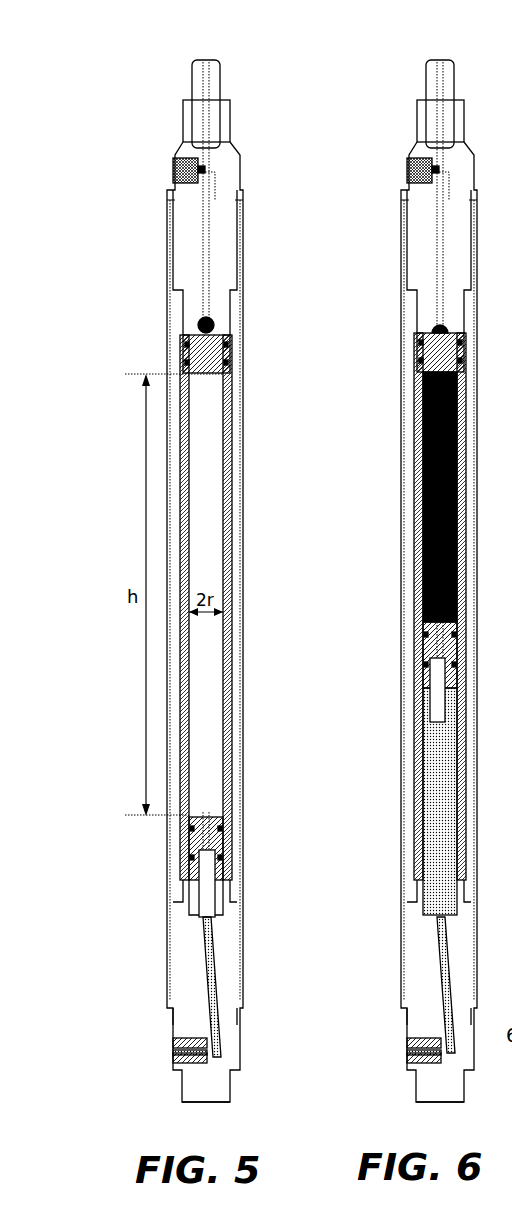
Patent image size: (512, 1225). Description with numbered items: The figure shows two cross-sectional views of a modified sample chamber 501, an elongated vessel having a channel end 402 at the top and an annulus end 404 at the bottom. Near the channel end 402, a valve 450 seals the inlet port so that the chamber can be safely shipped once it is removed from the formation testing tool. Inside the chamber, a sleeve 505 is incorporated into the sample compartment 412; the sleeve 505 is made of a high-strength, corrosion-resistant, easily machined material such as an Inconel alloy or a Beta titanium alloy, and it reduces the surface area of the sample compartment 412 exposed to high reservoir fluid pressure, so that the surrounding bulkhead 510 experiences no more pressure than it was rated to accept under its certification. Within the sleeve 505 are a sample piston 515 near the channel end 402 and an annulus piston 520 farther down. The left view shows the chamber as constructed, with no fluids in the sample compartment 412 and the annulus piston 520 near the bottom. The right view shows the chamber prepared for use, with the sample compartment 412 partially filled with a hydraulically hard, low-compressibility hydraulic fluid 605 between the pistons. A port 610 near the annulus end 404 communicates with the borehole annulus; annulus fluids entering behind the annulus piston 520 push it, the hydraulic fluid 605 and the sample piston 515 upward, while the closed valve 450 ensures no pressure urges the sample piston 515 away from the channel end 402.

In FIG. 5, the modified sample chamber 501 is at (120, 98).
In FIG. 5, the channel end 402 is at (176, 64).
In FIG. 6, the channel end 402 is at (374, 180).
In FIG. 6, the valve 450 is at (384, 174).
In FIG. 5, the sample piston 515 is at (192, 350).
In FIG. 6, the sample piston 515 is at (393, 343).
In FIG. 5, the sleeve 505 is at (228, 396).
In FIG. 5, the bulkhead 510 is at (236, 427).
In FIG. 5, the sample compartment 412 is at (212, 503).
In FIG. 6, the hydraulic fluid 605 is at (389, 497).
In FIG. 5, the annulus piston 520 is at (196, 845).
In FIG. 6, the annulus piston 520 is at (384, 765).
In FIG. 6, the port 610 is at (367, 1042).
In FIG. 5, the annulus end 404 is at (150, 1092).
In FIG. 6, the annulus end 404 is at (373, 1107).